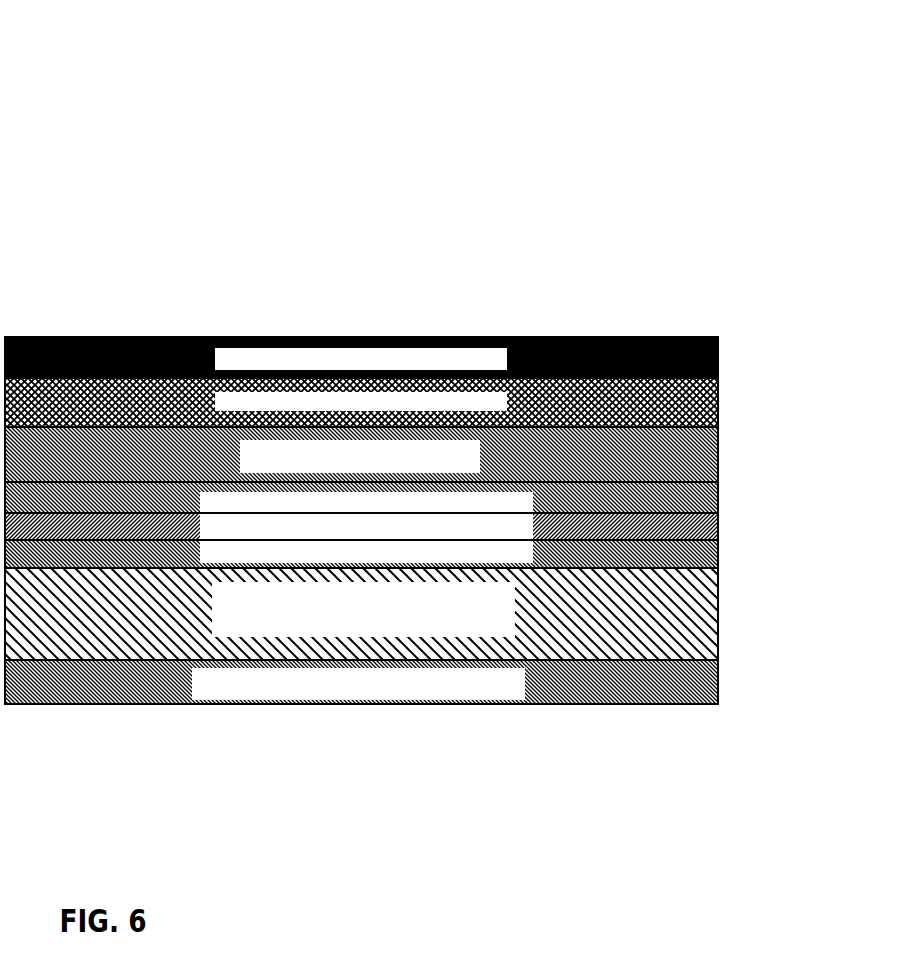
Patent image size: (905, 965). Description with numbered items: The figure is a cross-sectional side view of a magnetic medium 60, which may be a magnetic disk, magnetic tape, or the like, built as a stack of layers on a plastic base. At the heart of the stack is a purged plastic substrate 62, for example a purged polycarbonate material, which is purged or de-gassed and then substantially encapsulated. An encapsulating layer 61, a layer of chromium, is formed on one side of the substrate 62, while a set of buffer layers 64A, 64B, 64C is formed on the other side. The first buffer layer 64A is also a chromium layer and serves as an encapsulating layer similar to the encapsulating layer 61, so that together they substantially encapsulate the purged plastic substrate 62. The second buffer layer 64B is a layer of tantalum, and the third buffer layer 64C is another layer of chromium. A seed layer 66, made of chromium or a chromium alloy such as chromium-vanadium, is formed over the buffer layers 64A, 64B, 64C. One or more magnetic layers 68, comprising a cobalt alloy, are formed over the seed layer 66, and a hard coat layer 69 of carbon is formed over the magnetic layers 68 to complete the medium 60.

The magnetic medium 60 is at (474, 136).
The encapsulating layer 61 is at (718, 680).
The purged plastic substrate 62 is at (718, 607).
The buffer layer 64A is at (718, 555).
The buffer layer 64B is at (718, 525).
The buffer layer 64C is at (718, 493).
The seed layer 66 is at (718, 448).
The magnetic layers 68 is at (718, 398).
The hard coat layer 69 is at (718, 353).